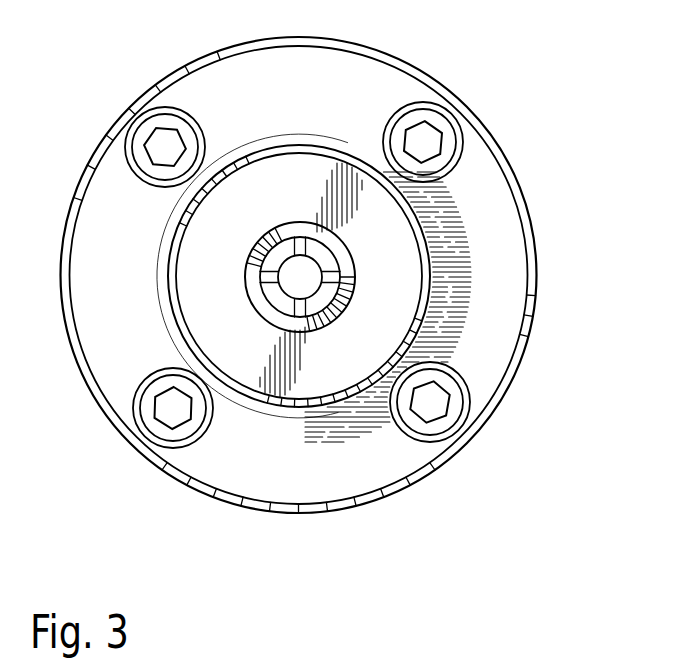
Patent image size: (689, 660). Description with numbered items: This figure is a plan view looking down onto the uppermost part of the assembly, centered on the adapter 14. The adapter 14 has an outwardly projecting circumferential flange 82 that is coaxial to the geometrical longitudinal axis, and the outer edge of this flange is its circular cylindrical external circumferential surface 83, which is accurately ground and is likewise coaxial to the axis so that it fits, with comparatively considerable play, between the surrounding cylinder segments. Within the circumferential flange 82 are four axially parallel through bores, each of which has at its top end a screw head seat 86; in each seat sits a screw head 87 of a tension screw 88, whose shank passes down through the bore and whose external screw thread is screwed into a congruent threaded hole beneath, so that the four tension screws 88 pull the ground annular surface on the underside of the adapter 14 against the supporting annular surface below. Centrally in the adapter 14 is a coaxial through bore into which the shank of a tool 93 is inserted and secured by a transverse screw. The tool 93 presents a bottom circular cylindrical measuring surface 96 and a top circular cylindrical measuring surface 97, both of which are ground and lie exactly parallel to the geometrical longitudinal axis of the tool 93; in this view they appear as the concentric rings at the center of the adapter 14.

The adapter 14 is at (543, 77).
The circumferential flange 82 is at (536, 231).
The external circumferential surface 83 is at (536, 294).
The screw head seat 86 is at (140, 112).
The screw head 87 is at (137, 165).
The tension screw 88 is at (175, 118).
The tool 93 is at (333, 255).
The bottom circular cylindrical measuring surface 96 is at (275, 316).
The top circular cylindrical measuring surface 97 is at (248, 293).